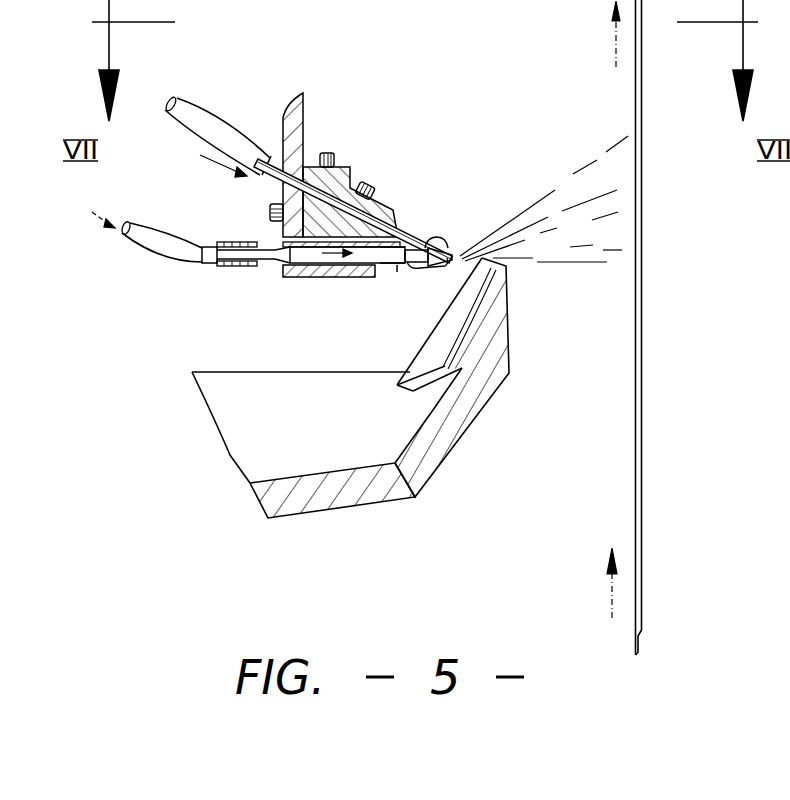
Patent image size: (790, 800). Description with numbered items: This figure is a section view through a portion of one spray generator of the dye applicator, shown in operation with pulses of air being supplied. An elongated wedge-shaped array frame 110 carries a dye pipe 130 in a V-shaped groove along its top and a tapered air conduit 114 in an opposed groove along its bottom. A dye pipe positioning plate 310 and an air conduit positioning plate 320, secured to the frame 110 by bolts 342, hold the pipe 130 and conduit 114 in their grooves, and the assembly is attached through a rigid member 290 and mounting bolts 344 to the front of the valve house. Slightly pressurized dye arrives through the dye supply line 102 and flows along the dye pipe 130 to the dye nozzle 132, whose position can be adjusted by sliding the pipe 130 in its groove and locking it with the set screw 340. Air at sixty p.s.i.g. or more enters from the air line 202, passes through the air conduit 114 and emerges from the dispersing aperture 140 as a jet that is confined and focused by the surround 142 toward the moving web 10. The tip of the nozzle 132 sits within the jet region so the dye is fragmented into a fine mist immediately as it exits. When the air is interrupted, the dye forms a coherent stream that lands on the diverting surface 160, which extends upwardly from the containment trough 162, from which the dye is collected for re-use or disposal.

The moving web 10 is at (643, 82).
The dye supply line 102 is at (207, 130).
The air line 202 is at (178, 262).
The array frame 110 is at (313, 245).
The air conduit 114 is at (383, 265).
The dye pipe 130 is at (400, 228).
The dye nozzle 132 is at (418, 236).
The dispersing aperture 140 is at (430, 268).
The surround 142 is at (455, 247).
The diverting surface 160 is at (497, 307).
The containment trough 162 is at (323, 430).
The rigid member 290 is at (305, 113).
The dye pipe positioning plate 310 is at (350, 170).
The air conduit positioning plate 320 is at (338, 279).
The set screw 340 is at (373, 182).
The bolt 342 is at (327, 152).
The mounting bolt 344 is at (270, 208).